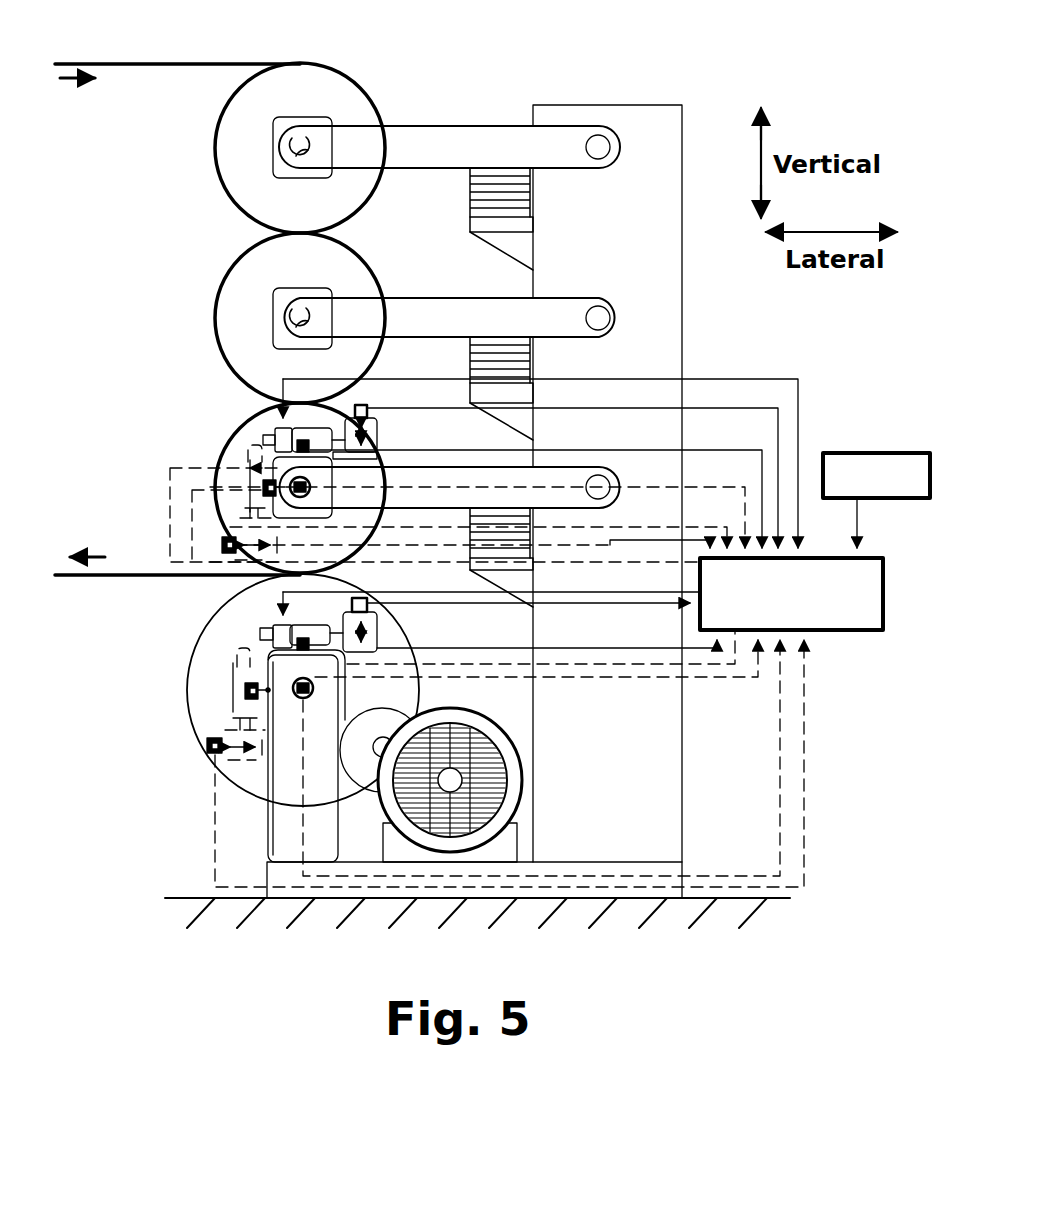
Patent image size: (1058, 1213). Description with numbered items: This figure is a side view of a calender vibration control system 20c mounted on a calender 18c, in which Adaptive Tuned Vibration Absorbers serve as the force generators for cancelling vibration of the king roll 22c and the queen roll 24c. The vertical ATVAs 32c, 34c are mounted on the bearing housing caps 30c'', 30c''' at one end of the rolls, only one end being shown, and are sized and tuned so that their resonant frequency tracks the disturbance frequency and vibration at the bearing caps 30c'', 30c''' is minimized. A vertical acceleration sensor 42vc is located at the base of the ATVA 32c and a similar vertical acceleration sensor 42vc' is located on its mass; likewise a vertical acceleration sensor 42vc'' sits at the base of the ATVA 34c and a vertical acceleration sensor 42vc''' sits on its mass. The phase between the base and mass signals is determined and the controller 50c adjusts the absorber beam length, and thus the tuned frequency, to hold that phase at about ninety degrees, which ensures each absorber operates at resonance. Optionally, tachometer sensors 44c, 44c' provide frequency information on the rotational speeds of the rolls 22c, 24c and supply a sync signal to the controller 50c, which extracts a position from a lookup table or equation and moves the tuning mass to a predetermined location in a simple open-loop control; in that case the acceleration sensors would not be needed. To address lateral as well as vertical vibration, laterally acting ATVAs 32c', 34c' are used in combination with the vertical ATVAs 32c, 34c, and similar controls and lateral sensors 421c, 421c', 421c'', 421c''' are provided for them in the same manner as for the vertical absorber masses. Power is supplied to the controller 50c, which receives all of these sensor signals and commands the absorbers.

The calender 18c is at (612, 98).
The calender vibration control system 20c is at (770, 368).
The Adaptive Tuned Vibration Absorber 34c is at (270, 237).
The vertical acceleration sensor 42vc'' is at (465, 456).
The vertical acceleration sensor 42vc''' is at (555, 445).
The laterally acting ATVA 34c' is at (203, 471).
The bearing housing cap 30c'' is at (446, 317).
The lateral sensor 421c'' is at (176, 477).
The queen roll 24c is at (192, 502).
The tachometer sensor 44c' is at (370, 507).
The lateral sensor 421c''' is at (172, 544).
The Adaptive Tuned Vibration Absorber 32c is at (221, 606).
The vertical acceleration sensor 42vc' is at (400, 608).
The vertical acceleration sensor 42vc is at (228, 634).
The laterally acting ATVA 32c' is at (185, 689).
The lateral sensor 421c is at (179, 698).
The king roll 22c is at (192, 727).
The bearing housing cap 30c''' is at (431, 771).
The lateral sensor 421c' is at (180, 775).
The tachometer sensor 44c is at (242, 756).
The controller 50c is at (830, 633).